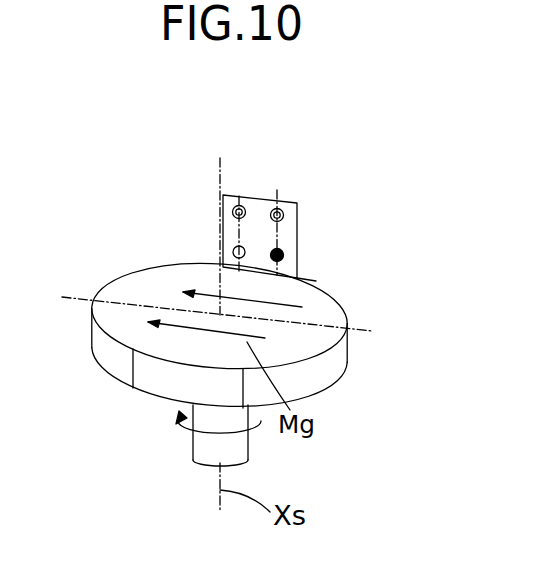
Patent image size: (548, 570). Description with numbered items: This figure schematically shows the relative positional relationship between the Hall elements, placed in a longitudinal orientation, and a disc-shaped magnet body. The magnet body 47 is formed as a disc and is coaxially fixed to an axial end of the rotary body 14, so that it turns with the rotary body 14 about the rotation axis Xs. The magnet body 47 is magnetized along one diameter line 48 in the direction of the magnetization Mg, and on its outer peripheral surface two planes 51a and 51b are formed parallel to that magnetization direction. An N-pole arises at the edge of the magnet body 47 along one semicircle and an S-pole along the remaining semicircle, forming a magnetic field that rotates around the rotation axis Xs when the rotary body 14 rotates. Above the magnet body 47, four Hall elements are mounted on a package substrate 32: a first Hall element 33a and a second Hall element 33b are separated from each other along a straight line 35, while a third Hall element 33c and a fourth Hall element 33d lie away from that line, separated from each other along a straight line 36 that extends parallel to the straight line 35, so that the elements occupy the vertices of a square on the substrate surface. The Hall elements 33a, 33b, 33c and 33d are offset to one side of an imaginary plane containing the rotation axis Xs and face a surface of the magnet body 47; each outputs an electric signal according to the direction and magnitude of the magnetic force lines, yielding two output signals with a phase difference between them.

The rotary body 14 is at (238, 448).
The package substrate 32 is at (298, 223).
The first Hall element 33a is at (234, 206).
The second Hall element 33b is at (232, 251).
The third Hall element 33c is at (282, 209).
The fourth Hall element 33d is at (284, 256).
The straight line 35 is at (239, 195).
The straight line 36 is at (277, 195).
The magnet body 47 is at (130, 276).
The diameter line 48 is at (367, 337).
The plane 51a is at (157, 386).
The plane 51b is at (298, 269).